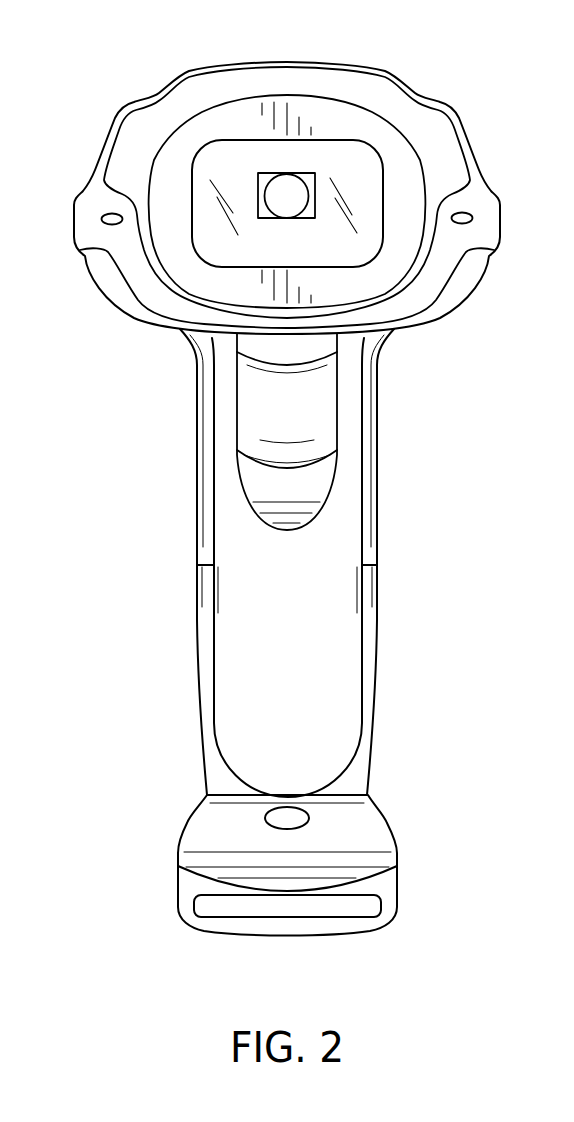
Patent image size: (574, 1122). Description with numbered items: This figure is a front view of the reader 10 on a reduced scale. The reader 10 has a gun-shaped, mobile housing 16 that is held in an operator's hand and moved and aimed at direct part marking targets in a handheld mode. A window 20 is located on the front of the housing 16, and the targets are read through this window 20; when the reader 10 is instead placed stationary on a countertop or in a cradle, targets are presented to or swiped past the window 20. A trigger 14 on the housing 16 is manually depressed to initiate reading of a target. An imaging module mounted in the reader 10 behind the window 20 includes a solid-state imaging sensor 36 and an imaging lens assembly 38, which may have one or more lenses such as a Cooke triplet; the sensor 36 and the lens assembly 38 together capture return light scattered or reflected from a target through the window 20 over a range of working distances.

The reader 10 is at (163, 352).
The trigger 14 is at (310, 395).
The housing 16 is at (297, 61).
The window 20 is at (167, 220).
The imaging sensor 36 is at (258, 196).
The imaging lens assembly 38 is at (315, 175).